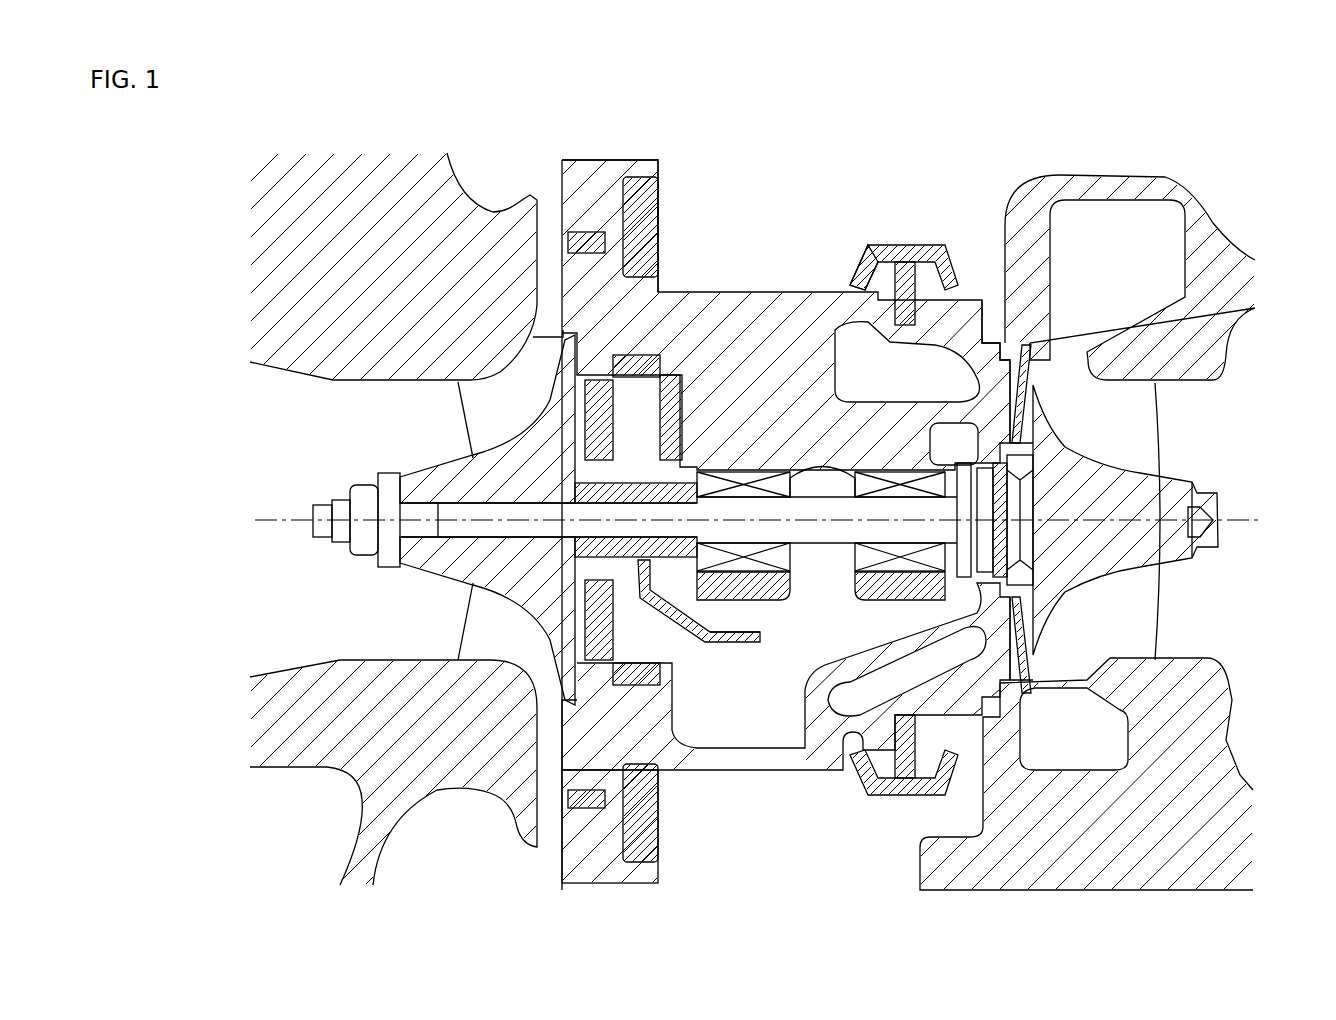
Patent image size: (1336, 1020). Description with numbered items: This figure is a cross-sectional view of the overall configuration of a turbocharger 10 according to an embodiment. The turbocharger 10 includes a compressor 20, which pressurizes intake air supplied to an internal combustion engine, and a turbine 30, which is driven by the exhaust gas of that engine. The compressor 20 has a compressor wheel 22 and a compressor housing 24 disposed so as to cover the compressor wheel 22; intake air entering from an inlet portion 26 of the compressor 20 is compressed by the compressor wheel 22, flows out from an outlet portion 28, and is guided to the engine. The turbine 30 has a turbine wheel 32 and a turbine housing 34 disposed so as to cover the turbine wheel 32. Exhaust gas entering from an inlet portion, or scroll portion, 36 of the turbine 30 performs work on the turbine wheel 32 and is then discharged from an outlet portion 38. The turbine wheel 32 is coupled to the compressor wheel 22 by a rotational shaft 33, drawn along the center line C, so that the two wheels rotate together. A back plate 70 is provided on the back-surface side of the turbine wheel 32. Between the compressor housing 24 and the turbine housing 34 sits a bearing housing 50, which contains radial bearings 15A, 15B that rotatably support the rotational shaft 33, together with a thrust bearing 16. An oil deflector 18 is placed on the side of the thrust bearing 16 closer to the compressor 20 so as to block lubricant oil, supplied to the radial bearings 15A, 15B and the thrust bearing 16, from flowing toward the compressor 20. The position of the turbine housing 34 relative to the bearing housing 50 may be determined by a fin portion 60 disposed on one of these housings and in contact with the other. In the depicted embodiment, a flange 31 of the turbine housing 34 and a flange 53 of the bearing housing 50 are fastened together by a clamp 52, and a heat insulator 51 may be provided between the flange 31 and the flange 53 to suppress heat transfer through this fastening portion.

The turbocharger 10 is at (1305, 84).
The radial bearing 15A is at (915, 470).
The radial bearing 15B is at (712, 465).
The thrust bearing 16 is at (690, 600).
The oil deflector 18 is at (735, 648).
The compressor 20 is at (420, 165).
The compressor wheel 22 is at (485, 640).
The compressor housing 24 is at (305, 165).
The inlet portion 26 is at (262, 640).
The outlet portion 28 is at (512, 176).
The turbine 30 is at (1219, 228).
The flange 31 is at (928, 270).
The turbine wheel 32 is at (1150, 440).
The rotational shaft 33 is at (825, 540).
The turbine housing 34 is at (1110, 182).
The inlet portion (scroll portion) 36 is at (1143, 226).
The outlet portion 38 is at (1212, 636).
The bearing housing 50 is at (762, 300).
The heat insulator 51 is at (902, 262).
The clamp 52 is at (868, 243).
The flange 53 is at (858, 262).
The fin portion 60 is at (1022, 745).
The back plate 70 is at (1022, 650).
The rotation axis C is at (1255, 520).